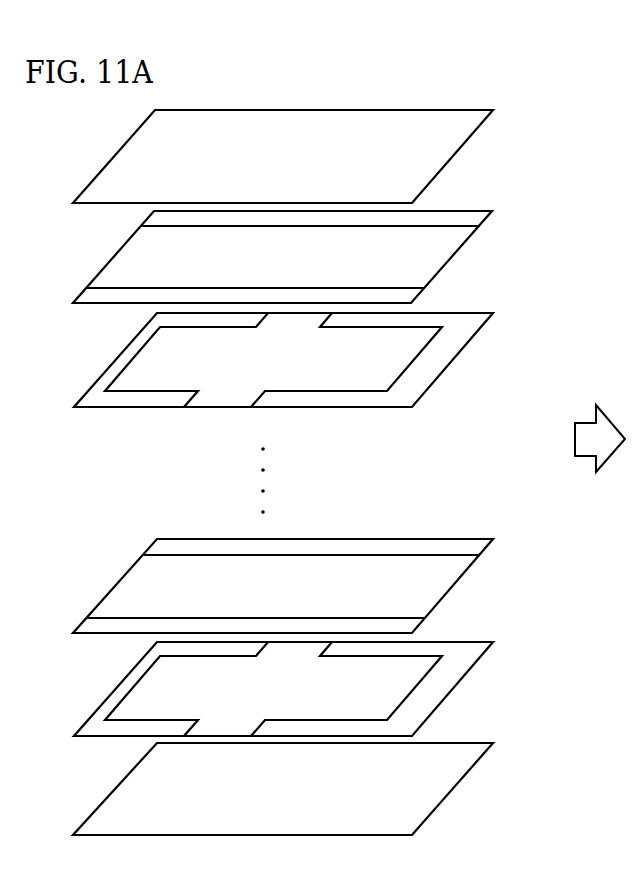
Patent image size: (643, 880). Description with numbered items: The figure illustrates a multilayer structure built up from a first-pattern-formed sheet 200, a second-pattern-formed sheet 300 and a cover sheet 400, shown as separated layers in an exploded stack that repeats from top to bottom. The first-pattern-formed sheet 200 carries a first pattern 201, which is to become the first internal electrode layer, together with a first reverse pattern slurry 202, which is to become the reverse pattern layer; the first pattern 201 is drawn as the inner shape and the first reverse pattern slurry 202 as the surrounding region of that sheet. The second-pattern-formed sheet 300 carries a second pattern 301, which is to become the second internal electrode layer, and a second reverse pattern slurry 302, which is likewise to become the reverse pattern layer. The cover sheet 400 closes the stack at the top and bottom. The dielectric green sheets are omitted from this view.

The cover sheet 400 is at (506, 105).
The second-pattern-formed sheet 300 is at (340, 402).
The second pattern 301 is at (447, 252).
The second reverse pattern slurry 302 is at (487, 215).
The first-pattern-formed sheet 200 is at (341, 506).
The first pattern 201 is at (398, 357).
The first reverse pattern slurry 202 is at (410, 388).